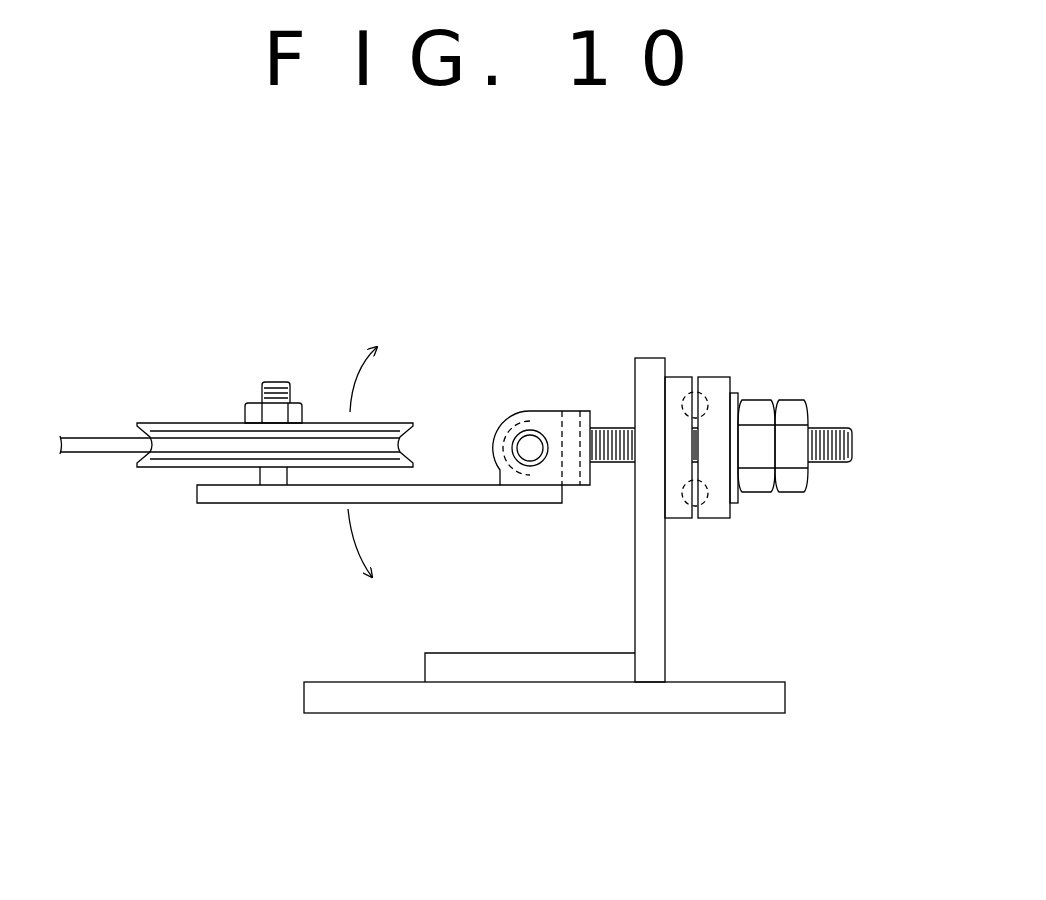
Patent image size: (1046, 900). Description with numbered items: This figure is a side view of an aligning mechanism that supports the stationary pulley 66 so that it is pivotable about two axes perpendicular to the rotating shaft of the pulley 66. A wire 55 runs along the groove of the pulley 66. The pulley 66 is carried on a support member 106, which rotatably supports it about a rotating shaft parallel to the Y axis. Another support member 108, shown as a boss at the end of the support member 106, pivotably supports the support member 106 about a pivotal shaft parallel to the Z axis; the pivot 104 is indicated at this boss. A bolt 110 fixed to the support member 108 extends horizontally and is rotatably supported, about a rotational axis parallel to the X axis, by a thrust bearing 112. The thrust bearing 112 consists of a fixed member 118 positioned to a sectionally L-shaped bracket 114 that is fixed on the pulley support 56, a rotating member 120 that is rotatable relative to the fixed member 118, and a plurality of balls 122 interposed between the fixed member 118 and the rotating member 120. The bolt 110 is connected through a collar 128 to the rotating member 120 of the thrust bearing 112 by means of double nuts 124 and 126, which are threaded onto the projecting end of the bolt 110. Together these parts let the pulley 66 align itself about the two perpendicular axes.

The wire 55 is at (88, 437).
The pulley support 56 is at (553, 713).
The stationary pulley 66 is at (208, 423).
The pivot bolt assembly 104 is at (531, 378).
The support member 106 is at (436, 503).
The support member 108 is at (508, 418).
The bolt 110 is at (605, 428).
The thrust bearing 112 is at (678, 350).
The bracket 114 is at (635, 591).
The fixed member 118 is at (680, 515).
The rotating member 120 is at (722, 487).
The balls 122 is at (708, 393).
The nut 124 is at (758, 407).
The nut 126 is at (800, 413).
The collar 128 is at (738, 397).